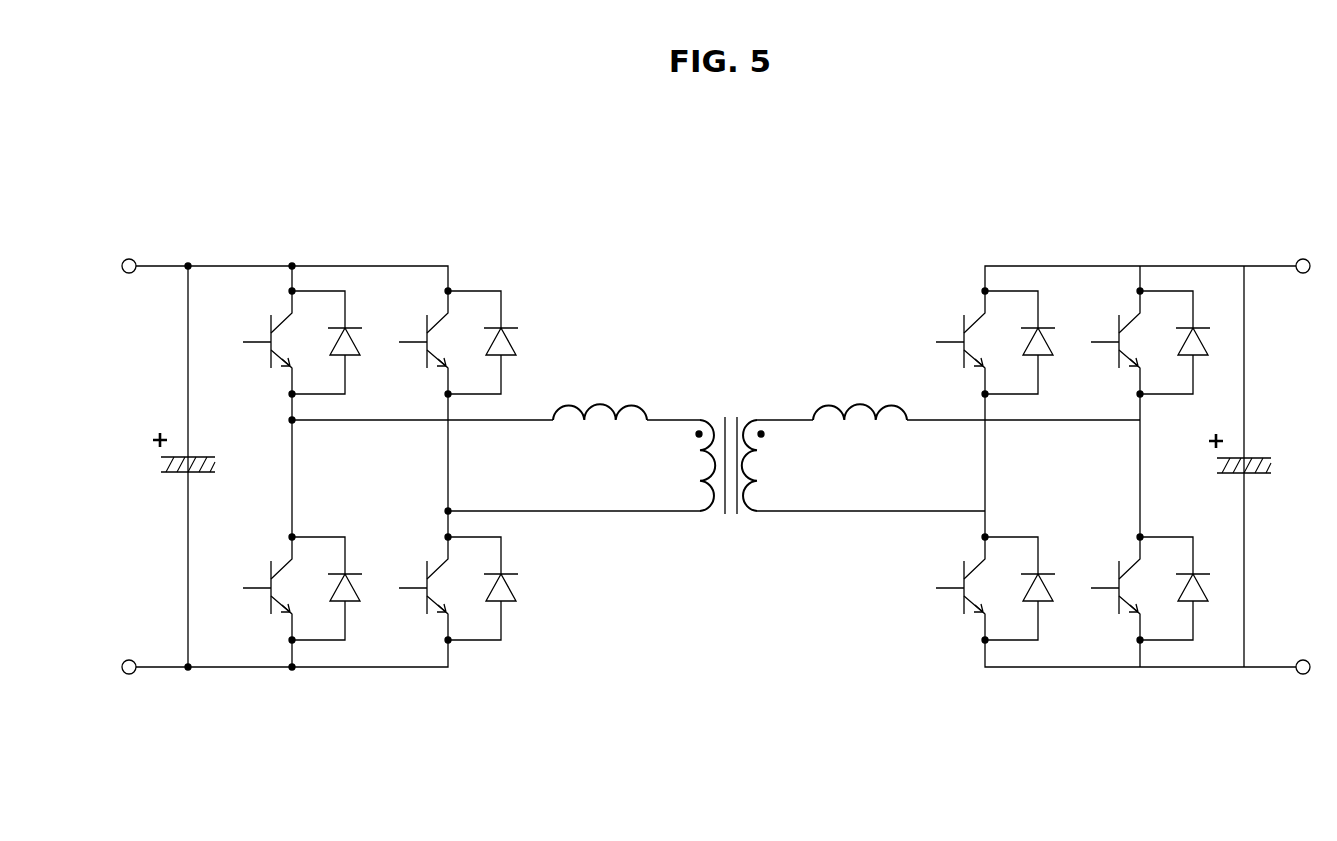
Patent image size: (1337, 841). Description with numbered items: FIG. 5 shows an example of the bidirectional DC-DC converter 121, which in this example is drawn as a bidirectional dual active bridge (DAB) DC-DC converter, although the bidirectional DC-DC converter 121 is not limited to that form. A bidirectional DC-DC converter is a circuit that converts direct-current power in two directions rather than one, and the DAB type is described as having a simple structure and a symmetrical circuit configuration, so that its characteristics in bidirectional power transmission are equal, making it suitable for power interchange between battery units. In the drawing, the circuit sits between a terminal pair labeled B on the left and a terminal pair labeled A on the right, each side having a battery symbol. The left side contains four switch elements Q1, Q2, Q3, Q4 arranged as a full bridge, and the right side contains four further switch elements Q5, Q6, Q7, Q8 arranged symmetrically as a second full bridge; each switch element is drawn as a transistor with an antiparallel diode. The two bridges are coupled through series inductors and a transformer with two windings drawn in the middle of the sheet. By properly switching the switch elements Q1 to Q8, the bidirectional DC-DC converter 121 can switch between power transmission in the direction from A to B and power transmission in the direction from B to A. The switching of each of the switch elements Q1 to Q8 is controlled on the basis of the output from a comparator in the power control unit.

The bidirectional DC-DC converter 121 is at (833, 211).
The switch element Q1 is at (302, 342).
The switch element Q2 is at (458, 342).
The switch element Q3 is at (302, 588).
The switch element Q4 is at (458, 588).
The switch element Q5 is at (995, 342).
The switch element Q6 is at (1150, 342).
The switch element Q7 is at (995, 588).
The switch element Q8 is at (1150, 588).